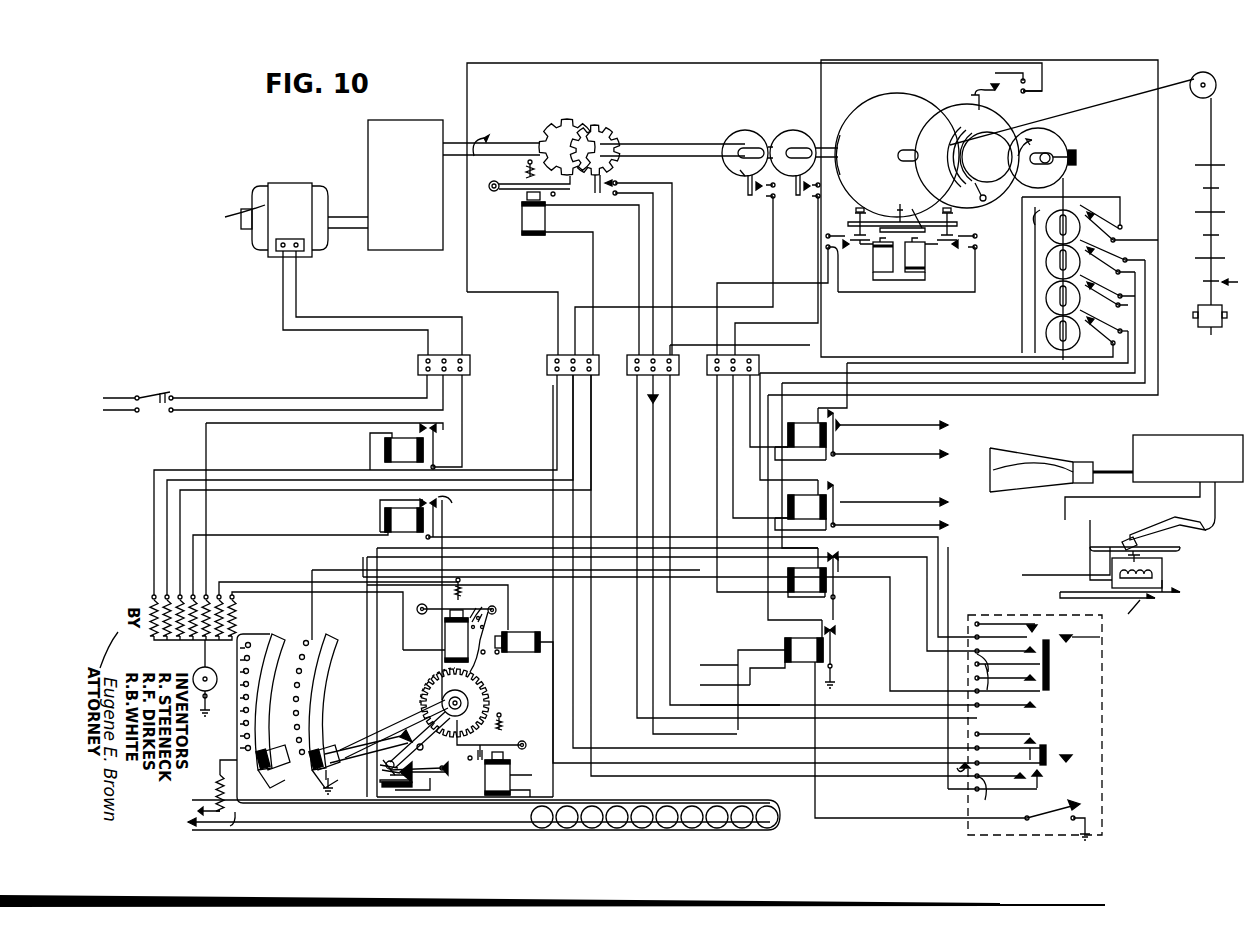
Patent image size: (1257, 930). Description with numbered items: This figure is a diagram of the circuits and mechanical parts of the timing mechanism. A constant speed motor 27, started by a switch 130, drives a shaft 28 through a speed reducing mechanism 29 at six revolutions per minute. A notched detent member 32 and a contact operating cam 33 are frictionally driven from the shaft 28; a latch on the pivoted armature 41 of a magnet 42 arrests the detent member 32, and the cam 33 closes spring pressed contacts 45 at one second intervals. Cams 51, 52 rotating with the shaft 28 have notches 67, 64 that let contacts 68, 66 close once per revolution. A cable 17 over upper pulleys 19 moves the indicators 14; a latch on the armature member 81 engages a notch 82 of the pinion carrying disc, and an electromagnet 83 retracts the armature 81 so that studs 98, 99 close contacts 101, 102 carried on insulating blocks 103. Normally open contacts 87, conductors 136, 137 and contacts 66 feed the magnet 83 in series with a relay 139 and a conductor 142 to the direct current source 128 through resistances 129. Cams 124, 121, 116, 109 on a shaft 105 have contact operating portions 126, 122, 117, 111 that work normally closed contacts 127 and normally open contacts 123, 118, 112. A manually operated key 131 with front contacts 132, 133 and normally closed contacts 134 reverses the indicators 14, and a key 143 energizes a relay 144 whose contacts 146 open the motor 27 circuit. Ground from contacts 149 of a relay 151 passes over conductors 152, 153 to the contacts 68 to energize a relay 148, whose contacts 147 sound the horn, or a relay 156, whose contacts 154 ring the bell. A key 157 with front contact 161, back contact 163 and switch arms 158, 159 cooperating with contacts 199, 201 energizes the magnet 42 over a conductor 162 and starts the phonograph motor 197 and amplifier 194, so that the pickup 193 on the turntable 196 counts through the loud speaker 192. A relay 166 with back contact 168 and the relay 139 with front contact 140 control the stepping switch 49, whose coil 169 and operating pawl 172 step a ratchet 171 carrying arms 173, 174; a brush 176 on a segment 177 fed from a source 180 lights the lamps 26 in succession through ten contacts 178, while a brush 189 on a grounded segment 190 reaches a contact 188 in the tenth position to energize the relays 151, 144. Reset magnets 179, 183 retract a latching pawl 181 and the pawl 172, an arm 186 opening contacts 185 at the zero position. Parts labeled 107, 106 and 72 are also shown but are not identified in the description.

The constant speed motor 27 is at (285, 195).
The speed reducing mechanism 29 is at (405, 130).
The shaft 28 is at (686, 148).
The notched circular detent member 32 is at (565, 130).
The contact operating cam 33 is at (608, 138).
The pivoted armature 41 is at (515, 185).
The magnet 42 is at (528, 210).
The spring pressed contacts 45 is at (628, 186).
The conductor 136 is at (662, 68).
The conductor 137 is at (908, 66).
The contact operating cam 51 is at (740, 138).
The contact operating cam 52 is at (797, 138).
The notch 67 is at (741, 185).
The contacts 68 is at (767, 192).
The steep sided notch 64 is at (819, 188).
The contacts 66 is at (816, 196).
The normally open contacts 87 is at (1032, 79).
The drum 107 is at (1068, 142).
The bearing 106 is at (1078, 158).
The upper pulleys 19 is at (1212, 80).
The flexible cord or cable 17 is at (1212, 122).
The movable indicator 14 is at (1210, 328).
The notch 82 is at (900, 204).
The bar 72 is at (888, 222).
The armature member 81 is at (921, 209).
The contact operating stud 98 is at (856, 214).
The contact operating stud 99 is at (957, 222).
The normally open spring contacts 101 is at (835, 250).
The normally open spring contacts 102 is at (968, 248).
The electromagnet 83 is at (886, 276).
The shaft 105 is at (1063, 360).
The contact operating portion 126 is at (1070, 212).
The cam 124 is at (1045, 224).
The normally closed contacts 127 is at (1114, 219).
The contact operating portion 122 is at (1048, 253).
The normally open contacts 123 is at (1113, 256).
The block of insulating material 103 is at (1040, 270).
The contact operating portion 117 is at (1050, 290).
The cam 121 is at (1075, 270).
The normally open contacts 118 is at (1108, 290).
The cam 116 is at (1050, 312).
The normally open contacts 112 is at (1104, 321).
The cam 109 is at (1048, 334).
The contact operating portion 111 is at (1075, 335).
The conductor 162 is at (636, 240).
The switch 130 is at (145, 392).
The relay 144 is at (385, 448).
The contacts 146 is at (440, 452).
The resistances 129 is at (152, 615).
The source of direct current 128 is at (193, 675).
The segment 177 is at (278, 632).
The contacts 178 is at (252, 638).
The contact 188 is at (310, 640).
The grounded segment 190 is at (318, 684).
The contact brush 176 is at (298, 769).
The brush 189 is at (333, 750).
The insulated contact arm 173 is at (352, 735).
The insulated contact arm 174 is at (414, 742).
The source of current 180 is at (218, 785).
The ratchet 171 is at (445, 685).
The stepping switch 49 is at (491, 704).
The coil 169 is at (445, 633).
The operating pawl 172 is at (490, 622).
The reset magnet 183 is at (520, 652).
The latching pawl 181 is at (478, 762).
The reset magnet 179 is at (512, 780).
The arm 186 is at (385, 785).
The contacts 185 is at (430, 790).
The lights 26 is at (677, 800).
The relay 166 is at (425, 522).
The back contact 168 is at (445, 500).
The conductor 142 is at (322, 500).
The conductor 153 is at (575, 440).
The relay 156 is at (800, 432).
The contacts 154 is at (838, 424).
The relay 148 is at (800, 505).
The contacts 147 is at (838, 497).
The relay 139 is at (790, 580).
The front contact 140 is at (835, 565).
The loud speaker 192 is at (1025, 465).
The amplifier 194 is at (1182, 448).
The phonograph pickup 193 is at (1178, 530).
The phonograph turntable 196 is at (1172, 556).
The motor 197 is at (1112, 566).
The relay 151 is at (785, 646).
The contacts 149 is at (834, 650).
The conductor 152 is at (738, 678).
The key 143 is at (1075, 800).
The back contact 163 is at (1022, 627).
The manually operable key 157 is at (1078, 635).
The switch arm 158 is at (1050, 664).
The switch arm 159 is at (1050, 690).
The front contact 161 is at (997, 672).
The contact 199 is at (1005, 692).
The contact 201 is at (1025, 700).
The normally closed contacts 134 is at (1017, 747).
The manually operated key 131 is at (1081, 746).
The front contact 133 is at (1037, 778).
The front contact 132 is at (992, 678).